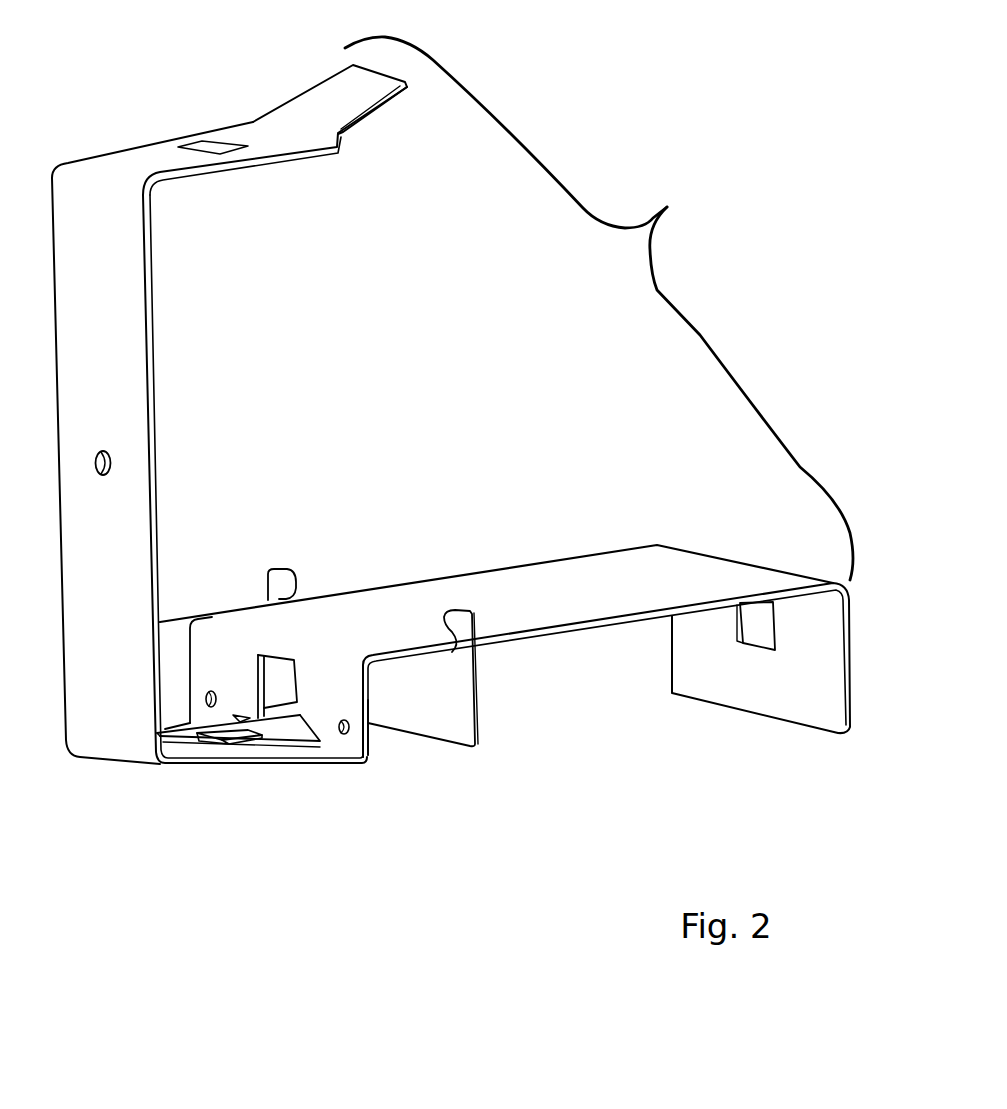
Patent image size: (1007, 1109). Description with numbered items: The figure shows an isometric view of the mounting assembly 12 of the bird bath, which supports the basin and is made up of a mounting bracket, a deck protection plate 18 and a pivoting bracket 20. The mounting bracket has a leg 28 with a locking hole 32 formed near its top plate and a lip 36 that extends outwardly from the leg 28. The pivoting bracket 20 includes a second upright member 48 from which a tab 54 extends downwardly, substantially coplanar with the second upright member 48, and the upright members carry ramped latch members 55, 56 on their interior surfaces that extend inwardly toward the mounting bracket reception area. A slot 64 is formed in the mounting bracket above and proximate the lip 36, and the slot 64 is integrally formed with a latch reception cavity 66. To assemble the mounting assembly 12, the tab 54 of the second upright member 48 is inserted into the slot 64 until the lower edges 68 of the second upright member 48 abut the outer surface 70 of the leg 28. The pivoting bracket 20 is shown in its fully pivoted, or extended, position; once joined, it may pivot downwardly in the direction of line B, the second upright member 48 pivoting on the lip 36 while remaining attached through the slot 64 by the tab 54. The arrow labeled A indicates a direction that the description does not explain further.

The mounting assembly 12 is at (668, 207).
The deck protection plate 18 is at (480, 678).
The pivoting bracket 20 is at (163, 290).
The leg 28 is at (210, 655).
The locking hole 32 is at (757, 623).
The lip 36 is at (375, 690).
The second upright member 48 is at (175, 743).
The tab 54 is at (283, 723).
The ramped latch member 55 is at (212, 147).
The ramped latch member 56 is at (215, 730).
The slot 64 is at (305, 727).
The latch reception cavity 66 is at (278, 688).
The lower edges 68 is at (316, 742).
The outer surface 70 is at (338, 677).
The direction A is at (253, 778).
The direction of pivoting B is at (532, 455).